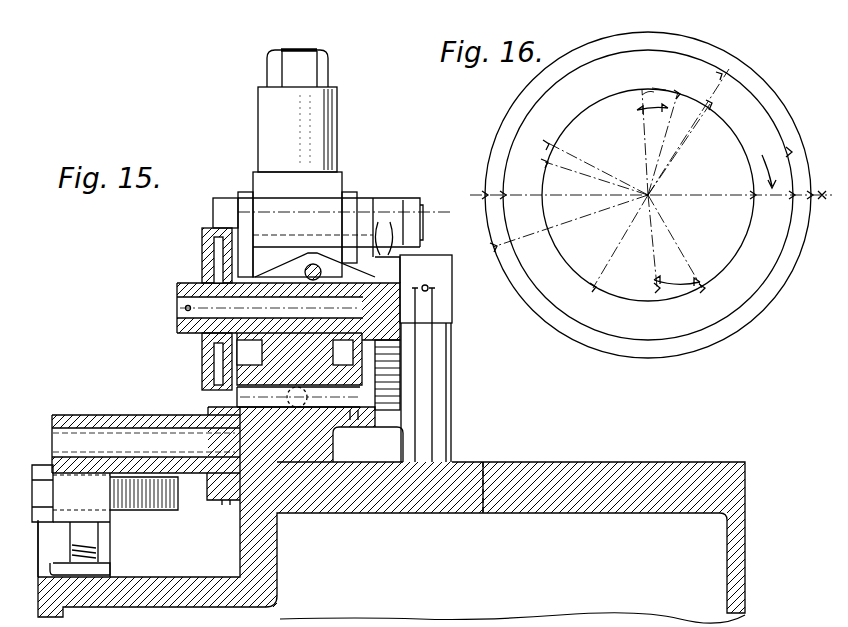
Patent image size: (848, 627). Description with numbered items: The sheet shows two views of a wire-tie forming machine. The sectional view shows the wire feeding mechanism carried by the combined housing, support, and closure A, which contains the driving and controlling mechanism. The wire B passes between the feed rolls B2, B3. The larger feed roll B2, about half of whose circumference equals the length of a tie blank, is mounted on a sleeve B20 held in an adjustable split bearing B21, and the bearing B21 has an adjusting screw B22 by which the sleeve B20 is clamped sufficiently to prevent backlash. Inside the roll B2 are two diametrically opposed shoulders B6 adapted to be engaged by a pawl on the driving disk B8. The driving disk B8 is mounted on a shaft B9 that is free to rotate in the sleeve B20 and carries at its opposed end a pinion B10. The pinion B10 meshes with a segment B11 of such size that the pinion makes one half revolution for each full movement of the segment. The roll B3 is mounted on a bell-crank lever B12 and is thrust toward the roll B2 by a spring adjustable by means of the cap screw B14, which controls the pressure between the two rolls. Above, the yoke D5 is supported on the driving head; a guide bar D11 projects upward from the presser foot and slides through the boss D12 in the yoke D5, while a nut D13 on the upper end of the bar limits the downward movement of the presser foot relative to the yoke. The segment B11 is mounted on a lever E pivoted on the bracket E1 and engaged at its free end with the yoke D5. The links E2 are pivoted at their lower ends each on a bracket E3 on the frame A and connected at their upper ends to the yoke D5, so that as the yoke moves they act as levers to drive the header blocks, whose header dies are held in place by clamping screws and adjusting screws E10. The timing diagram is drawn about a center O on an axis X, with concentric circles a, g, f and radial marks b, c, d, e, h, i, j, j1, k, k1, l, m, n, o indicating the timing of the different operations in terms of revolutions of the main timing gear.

In FIG. 15, the combined housing, support, and closure A is at (570, 468).
In FIG. 15, the wire B is at (213, 407).
In FIG. 15, the feed roll B2 is at (214, 232).
In FIG. 15, the feed roll B3 is at (221, 496).
In FIG. 15, the shoulders B6 is at (217, 375).
In FIG. 15, the driving disk B8 is at (203, 259).
In FIG. 15, the shaft B9 is at (178, 303).
In FIG. 15, the pinion B10 is at (400, 331).
In FIG. 15, the segment B11 is at (396, 380).
In FIG. 15, the bell-crank lever B12 is at (72, 487).
In FIG. 15, the cap screw B14 is at (93, 533).
In FIG. 15, the sleeve B20 is at (279, 290).
In FIG. 15, the adjustable split bearing B21 is at (293, 279).
In FIG. 15, the adjusting screw B22 is at (345, 263).
In FIG. 15, the yoke D5 is at (258, 184).
In FIG. 15, the guide bar D11 is at (295, 48).
In FIG. 15, the boss D12 is at (337, 110).
In FIG. 15, the nut D13 is at (328, 68).
In FIG. 15, the lever E is at (388, 243).
In FIG. 15, the bracket E1 is at (452, 316).
In FIG. 15, the links E2 is at (240, 198).
In FIG. 15, the bracket E3 is at (334, 441).
In FIG. 15, the adjusting screws E10 is at (358, 434).
In FIG. 16, the outer circle a is at (648, 185).
In FIG. 16, the point b is at (485, 232).
In FIG. 16, the point c is at (653, 363).
In FIG. 16, the point d is at (783, 142).
In FIG. 16, the point e is at (723, 69).
In FIG. 16, the inner circle f is at (648, 185).
In FIG. 16, the middle circle g is at (648, 198).
In FIG. 16, the arc h is at (762, 158).
In FIG. 16, the point i is at (693, 95).
In FIG. 16, the point j is at (605, 93).
In FIG. 16, the arc j1 is at (652, 113).
In FIG. 16, the point k is at (541, 153).
In FIG. 16, the point k1 is at (729, 152).
In FIG. 16, the point l is at (554, 243).
In FIG. 16, the point m is at (618, 299).
In FIG. 16, the arc n is at (679, 280).
In FIG. 16, the point o is at (733, 245).
In FIG. 16, the center O is at (651, 178).
In FIG. 16, the axis X is at (660, 195).